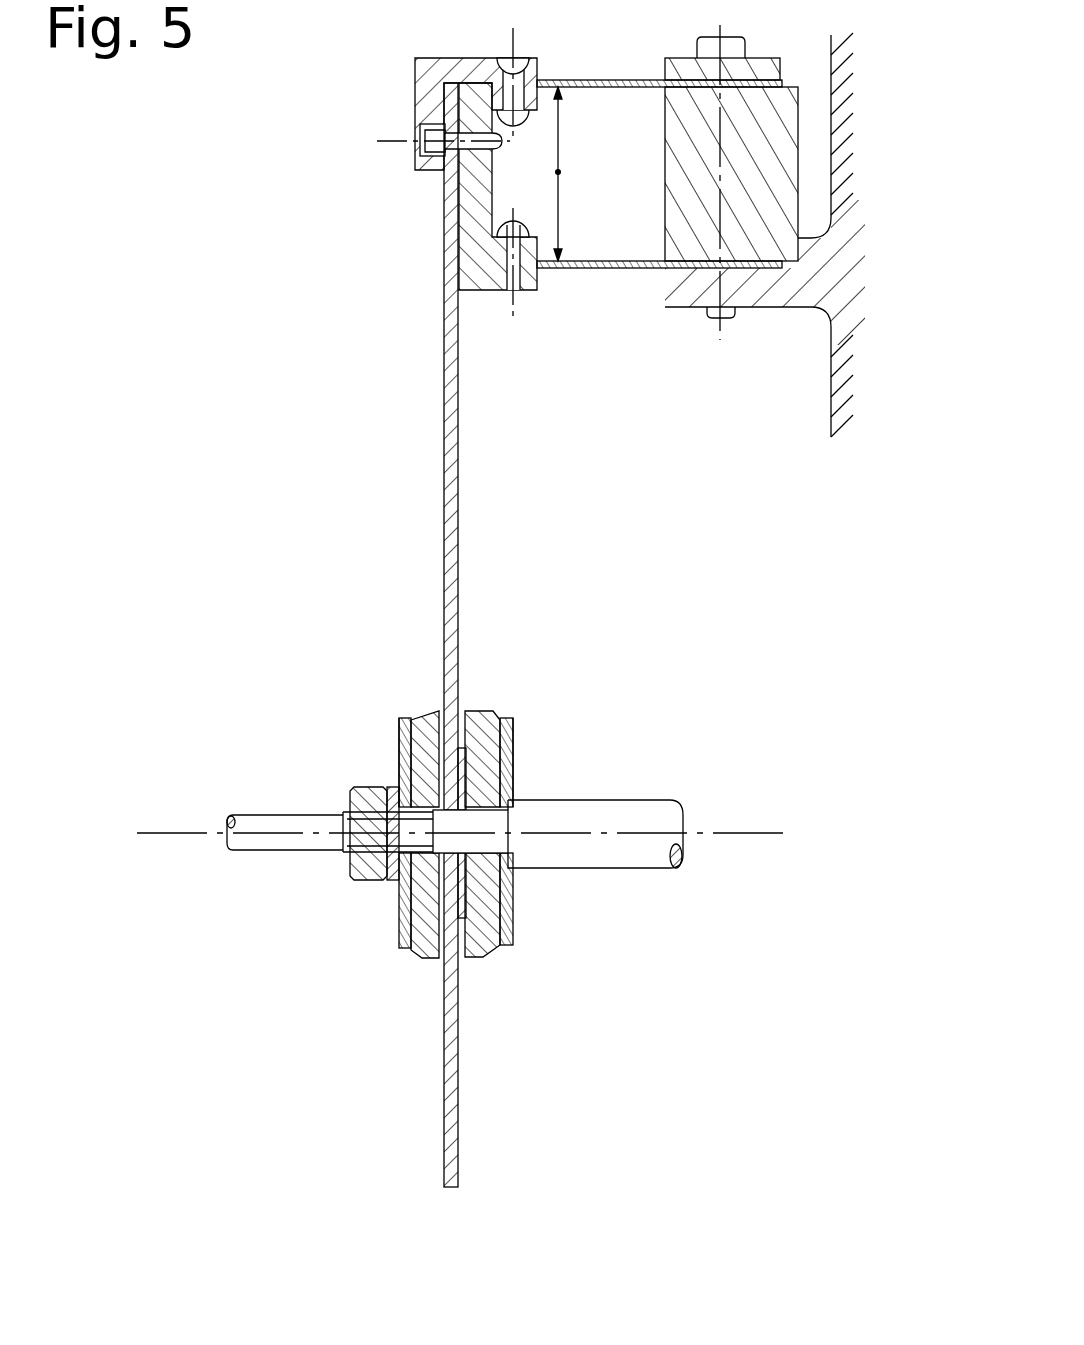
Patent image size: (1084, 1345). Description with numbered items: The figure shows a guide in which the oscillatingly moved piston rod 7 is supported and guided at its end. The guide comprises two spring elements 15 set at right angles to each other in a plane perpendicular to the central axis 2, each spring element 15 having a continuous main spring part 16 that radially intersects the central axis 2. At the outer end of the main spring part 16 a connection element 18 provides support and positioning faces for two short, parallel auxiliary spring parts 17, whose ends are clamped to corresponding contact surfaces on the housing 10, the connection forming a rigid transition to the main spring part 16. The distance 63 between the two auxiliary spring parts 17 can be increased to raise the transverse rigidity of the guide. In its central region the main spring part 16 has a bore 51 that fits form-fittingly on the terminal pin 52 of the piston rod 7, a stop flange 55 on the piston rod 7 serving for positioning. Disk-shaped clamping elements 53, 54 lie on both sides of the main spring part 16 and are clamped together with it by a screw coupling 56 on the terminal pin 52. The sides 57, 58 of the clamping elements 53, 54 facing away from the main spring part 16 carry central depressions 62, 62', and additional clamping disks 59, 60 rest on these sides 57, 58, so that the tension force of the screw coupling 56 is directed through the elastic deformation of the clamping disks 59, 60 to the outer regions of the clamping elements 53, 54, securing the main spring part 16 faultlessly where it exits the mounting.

The central axis 2 is at (727, 832).
The piston rod 7 is at (560, 850).
The housing 10 is at (840, 278).
The spring element 15 is at (428, 372).
The main spring part 16 is at (460, 663).
The auxiliary spring part 17 is at (600, 258).
The connection element 18 is at (427, 107).
The bore 51 is at (402, 897).
The terminal pin 52 is at (457, 843).
The clamping element 53 is at (430, 950).
The clamping element 54 is at (483, 957).
The stop flange 55 is at (510, 818).
The screw coupling 56 is at (357, 880).
The side of clamping element 57 is at (402, 702).
The side of clamping element 58 is at (508, 700).
The clamping disk 59 is at (397, 758).
The clamping disk 60 is at (515, 752).
The central depression 62 is at (314, 767).
The central depression 62' is at (586, 770).
The distance 63 is at (558, 172).